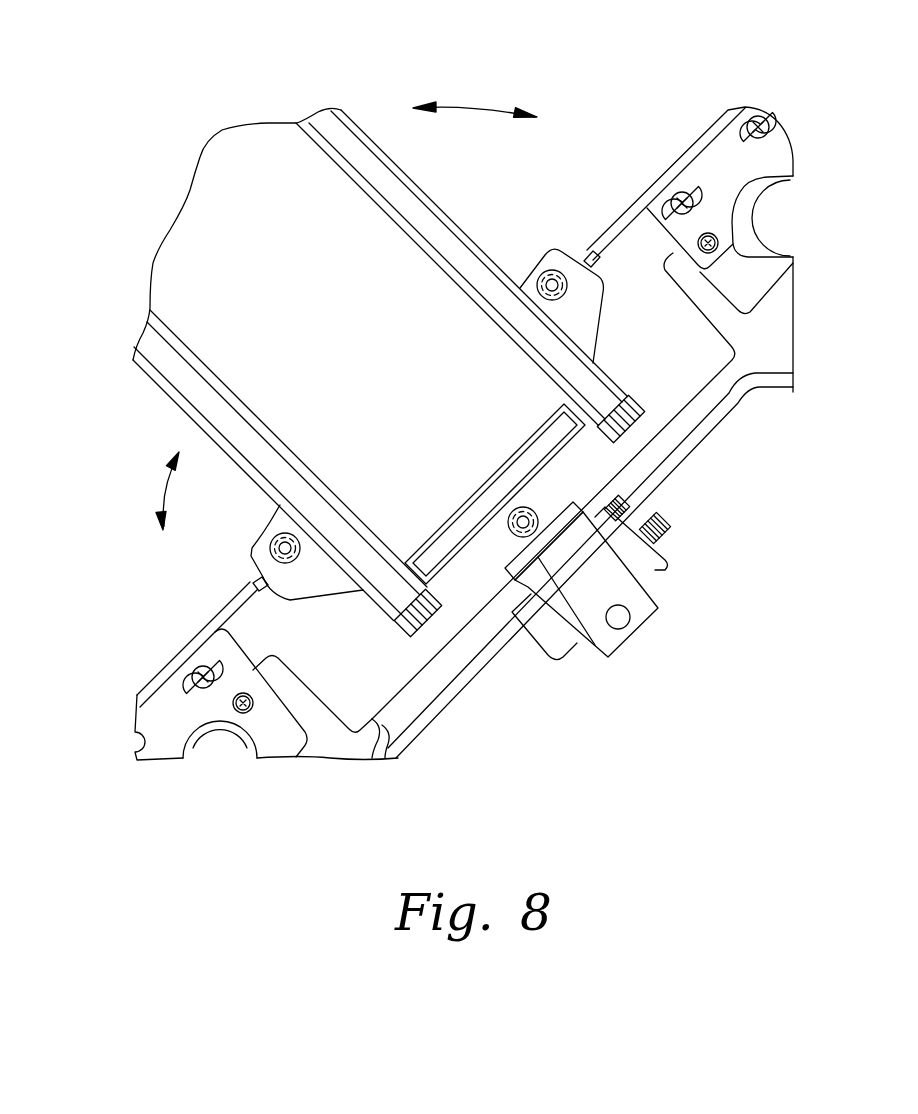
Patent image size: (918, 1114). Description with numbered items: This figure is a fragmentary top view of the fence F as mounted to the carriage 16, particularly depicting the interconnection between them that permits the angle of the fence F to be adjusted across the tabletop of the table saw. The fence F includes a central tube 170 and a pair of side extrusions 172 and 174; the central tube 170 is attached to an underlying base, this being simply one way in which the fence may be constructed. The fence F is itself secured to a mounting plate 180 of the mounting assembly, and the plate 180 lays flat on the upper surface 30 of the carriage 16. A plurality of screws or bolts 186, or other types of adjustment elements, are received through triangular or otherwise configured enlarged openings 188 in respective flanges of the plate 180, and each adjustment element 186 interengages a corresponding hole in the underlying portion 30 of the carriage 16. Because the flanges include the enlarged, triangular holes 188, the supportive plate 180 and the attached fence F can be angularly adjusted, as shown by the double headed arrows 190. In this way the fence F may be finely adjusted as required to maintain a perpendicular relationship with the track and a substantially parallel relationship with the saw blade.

The fence F is at (432, 201).
The carriage 16 is at (714, 425).
The upper surface 30 is at (243, 650).
The central tube 170 is at (466, 494).
The side extrusion 172 is at (420, 632).
The side extrusion 174 is at (614, 437).
The mounting plate 180 is at (250, 554).
The screws or bolts 186 is at (546, 276).
The enlarged openings 188 is at (563, 276).
The double headed arrows 190 is at (473, 107).